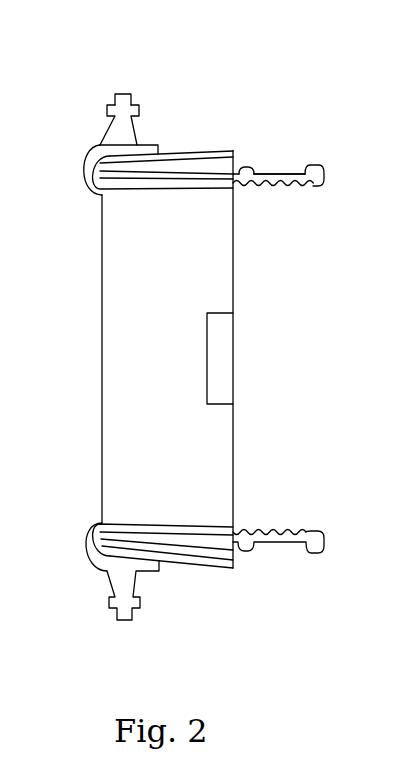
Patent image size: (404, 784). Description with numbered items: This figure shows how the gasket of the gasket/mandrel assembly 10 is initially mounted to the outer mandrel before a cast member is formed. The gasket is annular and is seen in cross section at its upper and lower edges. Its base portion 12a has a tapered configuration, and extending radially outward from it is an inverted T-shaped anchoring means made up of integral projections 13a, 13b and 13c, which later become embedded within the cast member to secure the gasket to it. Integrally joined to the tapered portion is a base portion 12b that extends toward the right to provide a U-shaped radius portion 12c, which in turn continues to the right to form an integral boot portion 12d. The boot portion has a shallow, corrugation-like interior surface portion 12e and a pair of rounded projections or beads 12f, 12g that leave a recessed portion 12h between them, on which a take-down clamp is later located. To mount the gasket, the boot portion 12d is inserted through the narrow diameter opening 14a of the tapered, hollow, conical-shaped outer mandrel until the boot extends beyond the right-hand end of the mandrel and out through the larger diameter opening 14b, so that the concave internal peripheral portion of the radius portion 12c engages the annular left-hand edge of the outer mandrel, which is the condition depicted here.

The gasket/mandrel assembly 10 is at (162, 520).
The base portion 12a is at (158, 144).
The base portion 12b is at (160, 158).
The U-shaped radius portion 12c is at (100, 172).
The boot portion 12d is at (216, 181).
The corrugation-like interior surface portion 12e is at (294, 186).
The rounded projection or bead 12f is at (254, 167).
The rounded projection or bead 12g is at (316, 165).
The recessed portion 12h is at (277, 174).
The integral projection 13a is at (107, 110).
The integral projection 13b is at (139, 111).
The integral projection 13c is at (127, 94).
The narrow diameter opening 14a is at (102, 310).
The larger diameter opening 14b is at (233, 432).